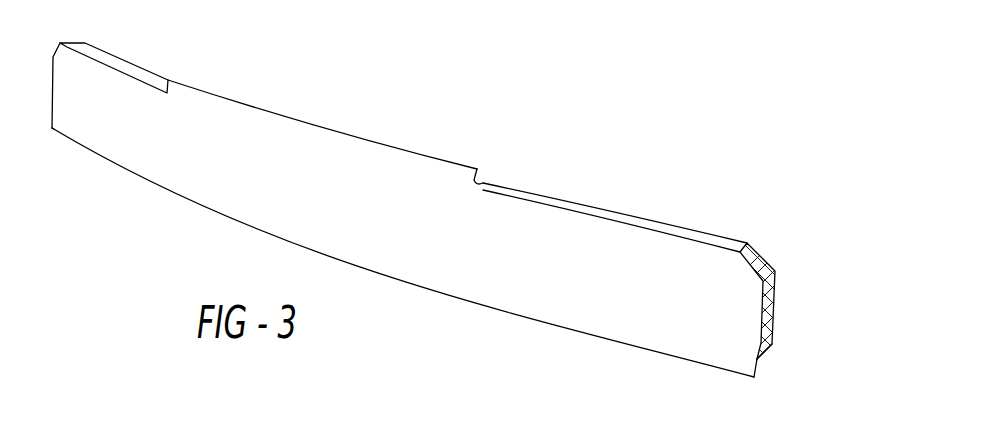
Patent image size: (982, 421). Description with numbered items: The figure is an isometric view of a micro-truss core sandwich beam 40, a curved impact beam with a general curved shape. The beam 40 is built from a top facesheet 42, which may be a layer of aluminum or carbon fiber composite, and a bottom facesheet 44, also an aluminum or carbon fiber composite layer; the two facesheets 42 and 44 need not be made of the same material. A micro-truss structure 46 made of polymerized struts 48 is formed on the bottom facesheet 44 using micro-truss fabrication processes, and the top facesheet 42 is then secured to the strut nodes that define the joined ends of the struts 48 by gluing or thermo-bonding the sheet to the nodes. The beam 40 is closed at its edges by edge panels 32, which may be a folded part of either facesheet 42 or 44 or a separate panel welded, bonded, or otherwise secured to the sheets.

The edge panels 32 is at (128, 68).
The micro-truss core sandwich beam 40 is at (529, 135).
The top facesheet 42 is at (88, 135).
The bottom facesheet 44 is at (770, 248).
The micro-truss structure 46 is at (776, 325).
The polymerized struts 48 is at (776, 293).